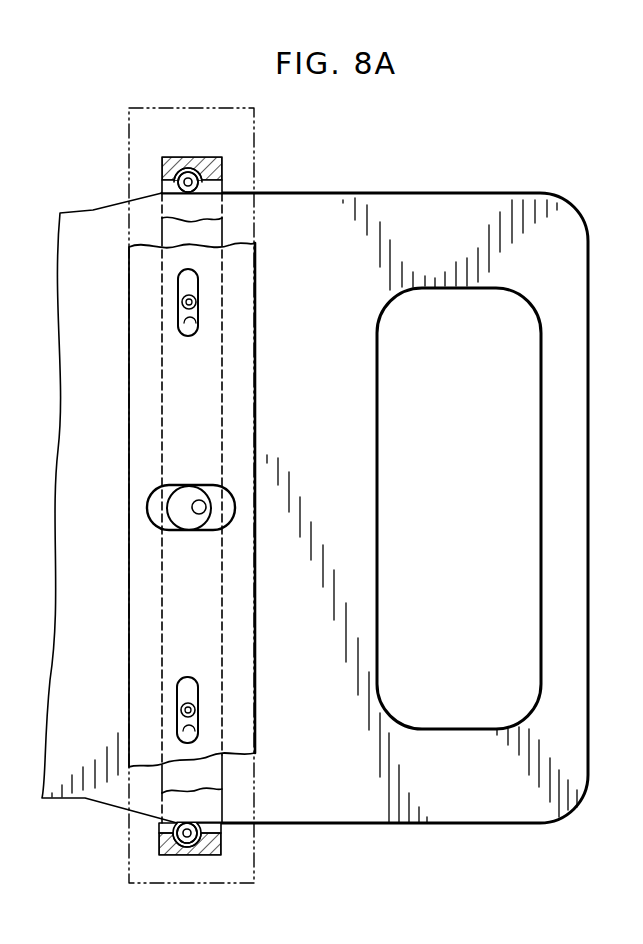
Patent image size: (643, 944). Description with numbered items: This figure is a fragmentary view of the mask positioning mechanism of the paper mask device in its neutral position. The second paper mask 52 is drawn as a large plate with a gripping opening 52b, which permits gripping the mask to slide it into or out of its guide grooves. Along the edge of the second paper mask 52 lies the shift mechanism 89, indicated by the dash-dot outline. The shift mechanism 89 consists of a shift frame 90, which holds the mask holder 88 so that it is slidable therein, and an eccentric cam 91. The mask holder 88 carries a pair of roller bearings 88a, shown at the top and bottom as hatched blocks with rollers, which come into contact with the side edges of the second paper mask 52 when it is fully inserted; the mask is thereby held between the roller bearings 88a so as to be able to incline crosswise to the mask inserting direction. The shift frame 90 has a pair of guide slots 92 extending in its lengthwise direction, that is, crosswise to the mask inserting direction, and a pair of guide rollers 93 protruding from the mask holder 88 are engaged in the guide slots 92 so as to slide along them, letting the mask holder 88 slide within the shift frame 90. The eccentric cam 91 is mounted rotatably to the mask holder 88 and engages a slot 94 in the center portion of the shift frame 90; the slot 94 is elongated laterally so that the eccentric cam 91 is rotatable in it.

The second paper mask 52 is at (443, 193).
The gripping opening 52b is at (541, 425).
The mask holder 88 is at (190, 157).
The roller bearings 88a is at (200, 187).
The shift mechanism 89 is at (99, 158).
The shift frame 90 is at (255, 270).
The eccentric cam 91 is at (193, 519).
The guide slots 92 is at (195, 325).
The guide rollers 93 is at (181, 305).
The slot 94 is at (167, 523).